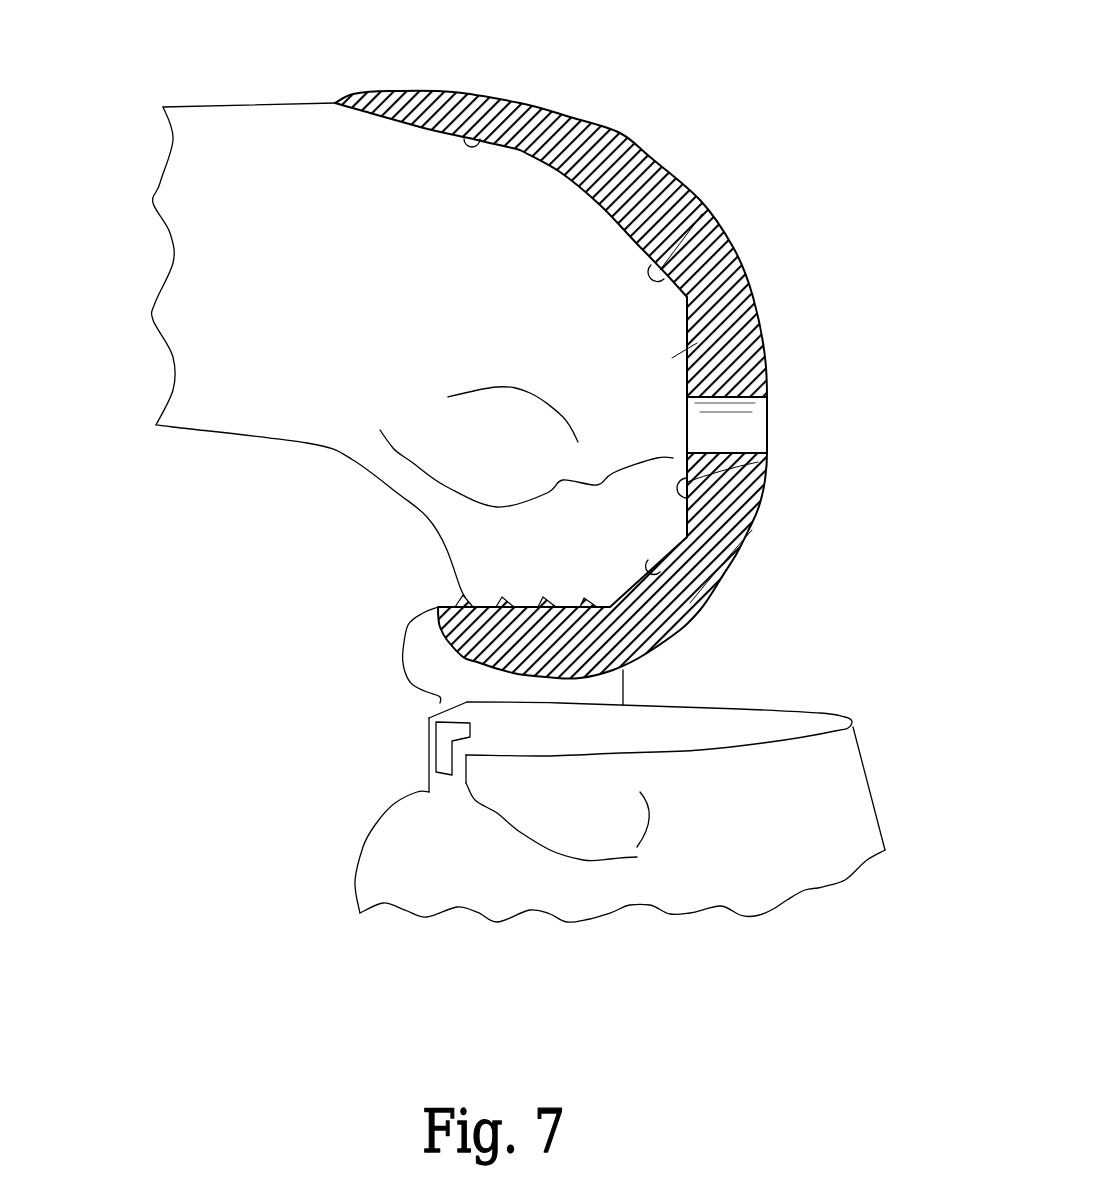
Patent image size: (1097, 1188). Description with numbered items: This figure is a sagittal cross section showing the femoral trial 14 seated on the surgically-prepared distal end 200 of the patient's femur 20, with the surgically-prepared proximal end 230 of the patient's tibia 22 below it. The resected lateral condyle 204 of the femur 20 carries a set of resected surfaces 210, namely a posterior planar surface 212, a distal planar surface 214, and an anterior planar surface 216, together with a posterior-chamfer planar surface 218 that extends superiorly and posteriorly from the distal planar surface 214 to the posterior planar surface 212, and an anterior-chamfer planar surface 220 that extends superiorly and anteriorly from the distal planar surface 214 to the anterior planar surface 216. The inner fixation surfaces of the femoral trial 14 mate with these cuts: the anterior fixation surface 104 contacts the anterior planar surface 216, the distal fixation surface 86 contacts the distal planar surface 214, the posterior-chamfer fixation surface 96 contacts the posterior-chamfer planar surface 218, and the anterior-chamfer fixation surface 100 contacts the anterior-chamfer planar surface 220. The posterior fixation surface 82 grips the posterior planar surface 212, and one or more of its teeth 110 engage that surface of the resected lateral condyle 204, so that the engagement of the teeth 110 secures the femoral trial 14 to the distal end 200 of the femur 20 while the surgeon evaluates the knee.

The femoral trial 14 is at (737, 117).
The femur 20 is at (200, 414).
The tibia 22 is at (856, 774).
The posterior fixation surface 82 is at (447, 601).
The distal fixation surface 86 is at (765, 463).
The posterior-chamfer fixation surface 96 is at (703, 606).
The anterior-chamfer fixation surface 100 is at (703, 208).
The anterior fixation surface 104 is at (470, 131).
The teeth 110 is at (590, 598).
The distal end 200 is at (760, 339).
The resected lateral condyle 204 is at (342, 441).
The resected surfaces 210 is at (412, 101).
The posterior planar surface 212 is at (602, 606).
The distal planar surface 214 is at (687, 392).
The anterior planar surface 216 is at (433, 128).
The posterior-chamfer planar surface 218 is at (671, 548).
The anterior-chamfer planar surface 220 is at (613, 236).
The proximal end 230 is at (828, 725).